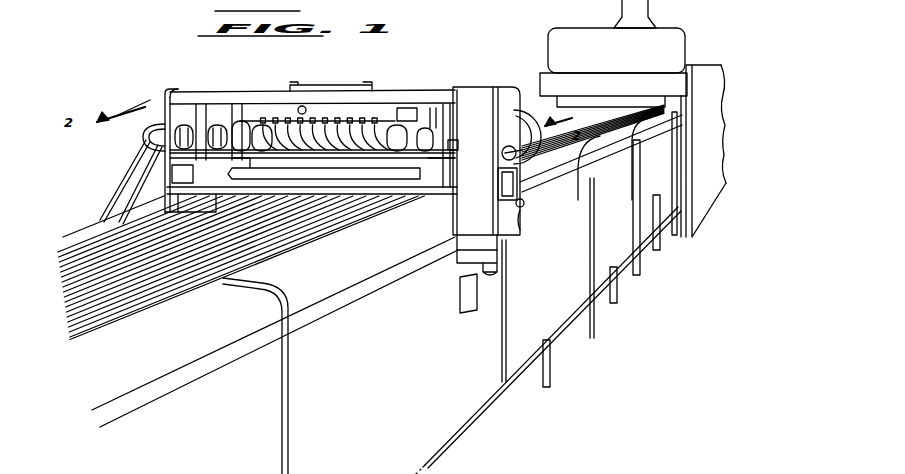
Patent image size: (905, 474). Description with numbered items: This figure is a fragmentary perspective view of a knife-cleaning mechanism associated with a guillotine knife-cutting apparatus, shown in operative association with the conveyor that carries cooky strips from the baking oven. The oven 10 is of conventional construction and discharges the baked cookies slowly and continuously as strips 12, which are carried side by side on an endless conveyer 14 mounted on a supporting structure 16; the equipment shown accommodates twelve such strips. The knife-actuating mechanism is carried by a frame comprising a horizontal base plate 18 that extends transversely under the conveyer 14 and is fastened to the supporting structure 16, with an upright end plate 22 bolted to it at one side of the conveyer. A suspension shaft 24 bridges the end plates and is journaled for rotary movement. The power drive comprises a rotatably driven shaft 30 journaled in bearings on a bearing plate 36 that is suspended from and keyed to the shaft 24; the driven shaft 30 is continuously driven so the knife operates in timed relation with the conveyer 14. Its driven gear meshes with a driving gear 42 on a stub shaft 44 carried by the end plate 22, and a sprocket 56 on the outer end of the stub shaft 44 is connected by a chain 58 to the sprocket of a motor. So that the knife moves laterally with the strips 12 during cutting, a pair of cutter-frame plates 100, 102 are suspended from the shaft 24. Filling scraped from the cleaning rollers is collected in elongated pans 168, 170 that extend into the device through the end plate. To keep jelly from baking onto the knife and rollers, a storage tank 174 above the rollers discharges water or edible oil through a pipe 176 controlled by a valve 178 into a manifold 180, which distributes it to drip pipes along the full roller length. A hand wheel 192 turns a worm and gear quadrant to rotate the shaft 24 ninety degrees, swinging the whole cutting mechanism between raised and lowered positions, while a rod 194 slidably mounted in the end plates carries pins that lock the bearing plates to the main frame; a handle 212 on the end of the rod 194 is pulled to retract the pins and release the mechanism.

The oven 10 is at (715, 122).
The cooky strips 12 is at (275, 253).
The endless conveyer 14 is at (600, 165).
The supporting structure 16 is at (443, 434).
The base plate 18 is at (413, 220).
The end plate 22 is at (183, 113).
The suspension shaft 24 is at (310, 93).
The driven shaft 30 is at (397, 112).
The bearing plate 36 is at (453, 143).
The driving gear 42 is at (170, 138).
The stub shaft 44 is at (192, 160).
The sprocket 56 is at (145, 145).
The chain 58 is at (182, 110).
The cutter-frame plate 100 is at (438, 110).
The cutter-frame plate 102 is at (233, 110).
The pan 168 is at (487, 184).
The pan 170 is at (519, 209).
The storage tank 174 is at (277, 110).
The pipe 176 is at (317, 112).
The valve 178 is at (300, 107).
The manifold 180 is at (347, 112).
The hand wheel 192 is at (540, 110).
The rod 194 is at (250, 173).
The handle 212 is at (524, 203).